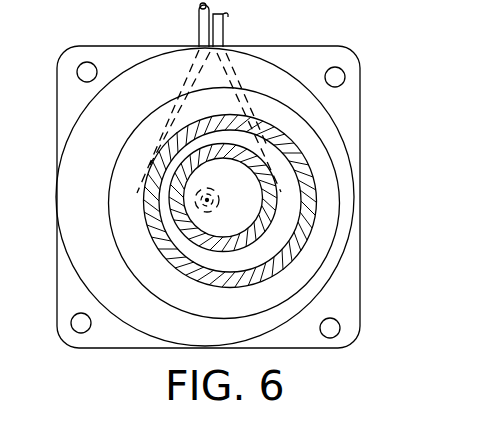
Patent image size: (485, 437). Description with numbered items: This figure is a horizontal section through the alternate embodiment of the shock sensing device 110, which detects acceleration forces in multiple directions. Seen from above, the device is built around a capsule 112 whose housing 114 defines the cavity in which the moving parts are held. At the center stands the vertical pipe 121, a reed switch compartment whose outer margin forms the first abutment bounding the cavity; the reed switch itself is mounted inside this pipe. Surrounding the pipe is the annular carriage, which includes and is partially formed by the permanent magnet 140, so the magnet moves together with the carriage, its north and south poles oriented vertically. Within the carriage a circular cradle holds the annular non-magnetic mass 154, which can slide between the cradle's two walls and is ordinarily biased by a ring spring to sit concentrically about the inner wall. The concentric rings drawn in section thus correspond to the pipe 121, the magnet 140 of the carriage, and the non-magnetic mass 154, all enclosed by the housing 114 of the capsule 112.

The shock sensing device 110 is at (368, 83).
The capsule 112 is at (362, 108).
The housing 114 is at (363, 127).
The non-magnetic mass 154 is at (317, 182).
The pipe 121 is at (185, 262).
The permanent magnet 140 is at (254, 238).